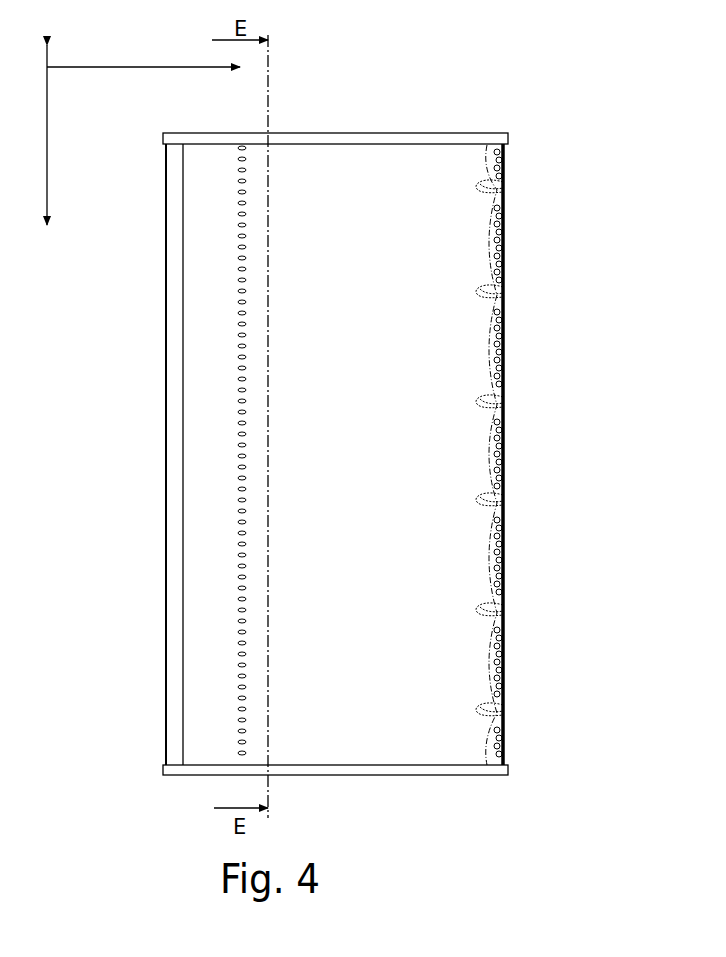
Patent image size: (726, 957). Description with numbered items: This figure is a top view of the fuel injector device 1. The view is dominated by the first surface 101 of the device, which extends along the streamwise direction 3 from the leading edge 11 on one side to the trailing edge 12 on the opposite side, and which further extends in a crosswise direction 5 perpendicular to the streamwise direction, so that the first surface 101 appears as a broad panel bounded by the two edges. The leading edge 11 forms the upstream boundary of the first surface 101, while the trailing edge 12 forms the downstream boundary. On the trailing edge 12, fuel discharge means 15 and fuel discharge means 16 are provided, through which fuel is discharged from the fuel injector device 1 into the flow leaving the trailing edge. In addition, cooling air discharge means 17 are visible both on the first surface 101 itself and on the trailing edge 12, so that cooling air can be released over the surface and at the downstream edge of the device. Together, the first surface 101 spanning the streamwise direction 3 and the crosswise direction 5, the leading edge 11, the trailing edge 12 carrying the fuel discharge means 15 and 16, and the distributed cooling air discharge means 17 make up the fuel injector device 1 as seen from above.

The fuel injector device 1 is at (562, 423).
The streamwise direction 3 is at (143, 83).
The crosswise direction 5 is at (58, 135).
The leading edge 11 is at (166, 332).
The trailing edge 12 is at (503, 237).
The fuel discharge means 15 is at (503, 192).
The fuel discharge means 16 is at (503, 322).
The cooling air discharge means 17 is at (242, 432).
The first surface 101 is at (404, 479).